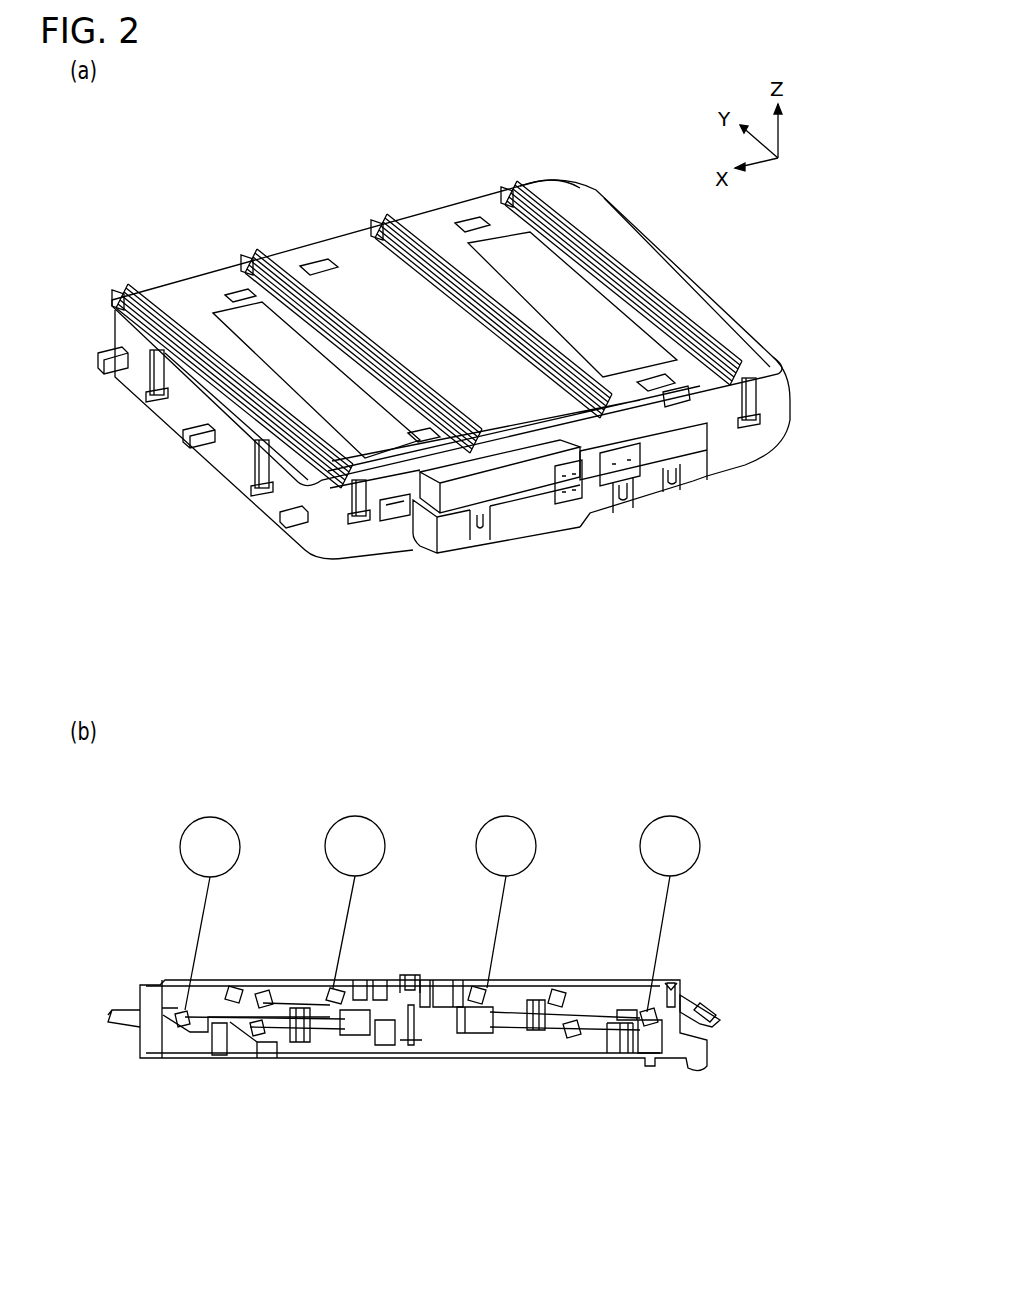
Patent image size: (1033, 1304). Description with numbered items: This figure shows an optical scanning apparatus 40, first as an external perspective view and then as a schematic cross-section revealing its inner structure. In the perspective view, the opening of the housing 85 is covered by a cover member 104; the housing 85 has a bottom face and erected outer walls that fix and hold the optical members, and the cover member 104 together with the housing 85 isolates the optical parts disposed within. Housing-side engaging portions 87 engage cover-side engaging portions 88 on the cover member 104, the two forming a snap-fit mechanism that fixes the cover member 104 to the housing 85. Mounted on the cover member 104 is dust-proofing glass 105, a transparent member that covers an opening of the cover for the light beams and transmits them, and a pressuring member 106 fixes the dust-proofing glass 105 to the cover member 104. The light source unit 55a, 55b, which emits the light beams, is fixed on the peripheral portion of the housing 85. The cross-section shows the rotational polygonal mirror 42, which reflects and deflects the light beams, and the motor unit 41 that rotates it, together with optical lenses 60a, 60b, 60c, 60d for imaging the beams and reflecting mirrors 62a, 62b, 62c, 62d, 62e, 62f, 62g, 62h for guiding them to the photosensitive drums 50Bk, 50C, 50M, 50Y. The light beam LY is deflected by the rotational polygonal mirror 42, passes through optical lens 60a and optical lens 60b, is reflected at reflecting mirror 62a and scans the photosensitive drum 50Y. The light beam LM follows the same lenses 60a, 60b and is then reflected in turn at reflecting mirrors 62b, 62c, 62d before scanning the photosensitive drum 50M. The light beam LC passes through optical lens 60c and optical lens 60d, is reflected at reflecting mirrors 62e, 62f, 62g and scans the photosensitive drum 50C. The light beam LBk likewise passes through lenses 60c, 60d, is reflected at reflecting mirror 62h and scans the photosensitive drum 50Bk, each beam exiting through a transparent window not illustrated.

The optical scanning apparatus 40 is at (297, 570).
The motor unit 41 is at (380, 1045).
The rotational polygonal mirror 42 is at (410, 1044).
The photosensitive drum 50Bk is at (208, 830).
The photosensitive drum 50C is at (353, 830).
The photosensitive drum 50M is at (506, 830).
The photosensitive drum 50Y is at (668, 830).
The light beam LBk is at (217, 943).
The light beam LC is at (360, 932).
The light beam LM is at (513, 932).
The light beam LY is at (676, 944).
The light source unit 55a is at (478, 540).
The light source unit 55b is at (675, 492).
The optical lens 60a is at (478, 1033).
The optical lens 60b is at (530, 1002).
The optical lens 60c is at (350, 1035).
The optical lens 60d is at (300, 1008).
The reflecting mirror 62a is at (647, 1012).
The reflecting mirror 62b is at (572, 1022).
The reflecting mirror 62c is at (555, 992).
The reflecting mirror 62d is at (478, 990).
The reflecting mirror 62e is at (236, 996).
The reflecting mirror 62f is at (262, 997).
The reflecting mirror 62g is at (340, 992).
The reflecting mirror 62h is at (178, 1012).
The housing 85 is at (218, 455).
The housing-side engaging portion 87 is at (148, 378).
The cover-side engaging portion 88 is at (152, 388).
The cover member 104 is at (638, 234).
The dust-proofing glass 105 is at (128, 284).
The pressuring member 106 is at (118, 302).